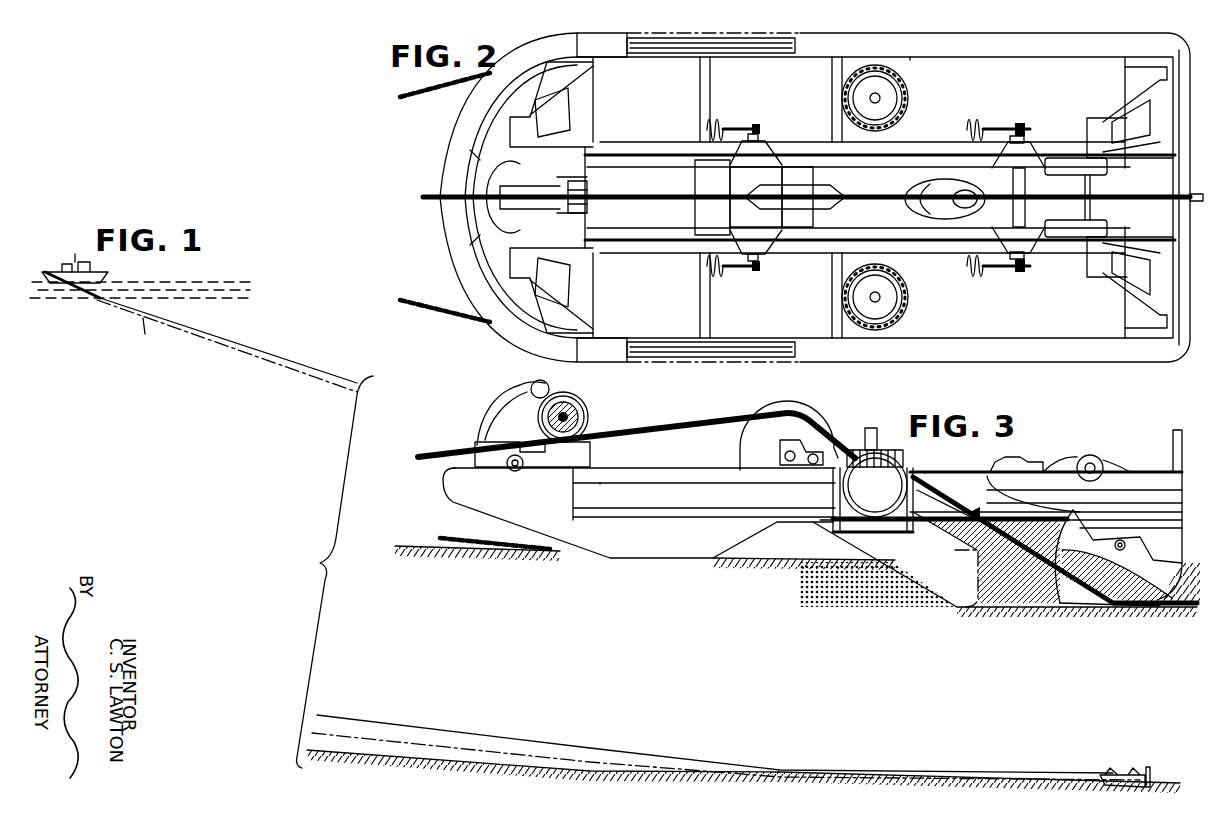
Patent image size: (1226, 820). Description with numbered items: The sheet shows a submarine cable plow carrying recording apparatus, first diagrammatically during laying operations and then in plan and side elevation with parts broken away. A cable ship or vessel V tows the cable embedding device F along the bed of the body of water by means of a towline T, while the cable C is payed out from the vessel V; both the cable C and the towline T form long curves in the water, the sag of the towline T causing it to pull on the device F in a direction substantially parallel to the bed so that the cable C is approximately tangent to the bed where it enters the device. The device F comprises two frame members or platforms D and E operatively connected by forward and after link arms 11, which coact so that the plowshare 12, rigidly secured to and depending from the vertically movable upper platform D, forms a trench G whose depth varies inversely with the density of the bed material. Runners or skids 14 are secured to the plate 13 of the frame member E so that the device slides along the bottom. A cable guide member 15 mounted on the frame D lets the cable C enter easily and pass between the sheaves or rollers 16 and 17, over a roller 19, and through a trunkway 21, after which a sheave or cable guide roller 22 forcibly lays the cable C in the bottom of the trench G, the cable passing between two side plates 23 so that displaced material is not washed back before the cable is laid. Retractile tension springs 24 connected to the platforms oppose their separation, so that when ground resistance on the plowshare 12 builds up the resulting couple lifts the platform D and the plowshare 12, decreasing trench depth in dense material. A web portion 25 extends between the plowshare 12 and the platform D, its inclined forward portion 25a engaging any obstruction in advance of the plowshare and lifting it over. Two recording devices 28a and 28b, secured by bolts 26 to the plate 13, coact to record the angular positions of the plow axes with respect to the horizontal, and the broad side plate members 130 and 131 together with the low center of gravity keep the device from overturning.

In FIG. 2, the link arms 11 is at (583, 99).
In FIG. 3, the plowshare 12 is at (966, 608).
In FIG. 2, the plate 13 is at (925, 328).
In FIG. 3, the plate 13 is at (875, 516).
In FIG. 3, the runners or skids 14 is at (639, 556).
In FIG. 2, the cable guide member 15 is at (496, 222).
In FIG. 3, the cable guide member 15 is at (510, 404).
In FIG. 2, the sheave or roller 16 is at (502, 172).
In FIG. 3, the sheave or roller 16 is at (514, 444).
In FIG. 2, the sheave or roller 17 is at (586, 193).
In FIG. 3, the sheave or roller 17 is at (585, 402).
In FIG. 2, the cable guide roller 19 is at (745, 193).
In FIG. 3, the cable guide roller 19 is at (772, 406).
In FIG. 2, the trunkway 21 is at (925, 208).
In FIG. 3, the trunkway 21 is at (1005, 557).
In FIG. 3, the sheave or cable guide roller 22 is at (1110, 608).
In FIG. 3, the side plates 23 is at (1070, 607).
In FIG. 2, the retractile tension springs 24 is at (716, 123).
In FIG. 3, the web portion 25 is at (930, 603).
In FIG. 3, the inclined forward portion 25a is at (939, 576).
In FIG. 3, the bolts 26 is at (833, 530).
In FIG. 2, the recording device 28a is at (873, 330).
In FIG. 3, the recording device 28a is at (875, 472).
In FIG. 2, the recording device 28b is at (878, 67).
In FIG. 2, the side plate member 130 is at (598, 38).
In FIG. 2, the side plate member 131 is at (706, 40).
In FIG. 1, the cable C is at (248, 351).
In FIG. 2, the cable C is at (433, 206).
In FIG. 3, the cable C is at (668, 432).
In FIG. 2, the frame member or platform D is at (866, 197).
In FIG. 3, the frame member or platform D is at (947, 476).
In FIG. 2, the frame member or platform E is at (815, 197).
In FIG. 3, the frame member or platform E is at (646, 501).
In FIG. 2, the cable embedding device F is at (438, 149).
In FIG. 3, the cable embedding device F is at (1118, 772).
In FIG. 3, the trench G is at (1177, 610).
In FIG. 1, the towline T is at (141, 341).
In FIG. 2, the towline T is at (435, 201).
In FIG. 3, the towline T is at (442, 538).
In FIG. 1, the cable ship or vessel V is at (63, 266).